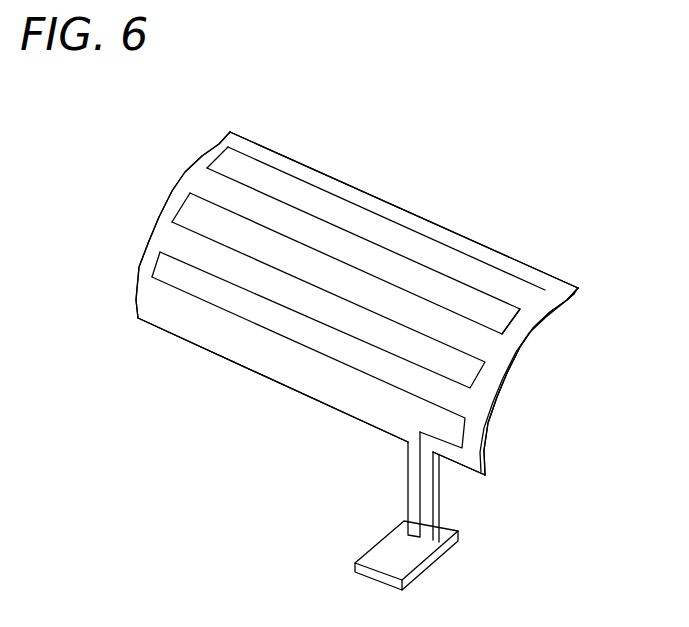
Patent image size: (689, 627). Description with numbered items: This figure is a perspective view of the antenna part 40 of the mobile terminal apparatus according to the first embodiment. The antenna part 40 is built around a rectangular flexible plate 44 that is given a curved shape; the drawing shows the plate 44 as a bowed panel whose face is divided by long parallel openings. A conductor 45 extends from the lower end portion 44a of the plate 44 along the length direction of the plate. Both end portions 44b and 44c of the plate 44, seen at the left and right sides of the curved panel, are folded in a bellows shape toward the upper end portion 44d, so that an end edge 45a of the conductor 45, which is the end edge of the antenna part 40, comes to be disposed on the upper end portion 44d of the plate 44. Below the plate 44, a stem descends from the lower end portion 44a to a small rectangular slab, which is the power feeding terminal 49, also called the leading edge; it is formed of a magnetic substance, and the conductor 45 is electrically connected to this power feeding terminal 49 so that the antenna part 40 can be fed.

The antenna part 40 is at (426, 207).
The flexible plate 44 is at (485, 236).
The lower end portion 44a is at (323, 403).
The end portion 44b is at (157, 228).
The end portion 44c is at (502, 350).
The upper end portion 44d is at (342, 183).
The conductor 45 is at (267, 328).
The end edge 45a is at (537, 286).
The power feeding terminal 49 is at (407, 556).